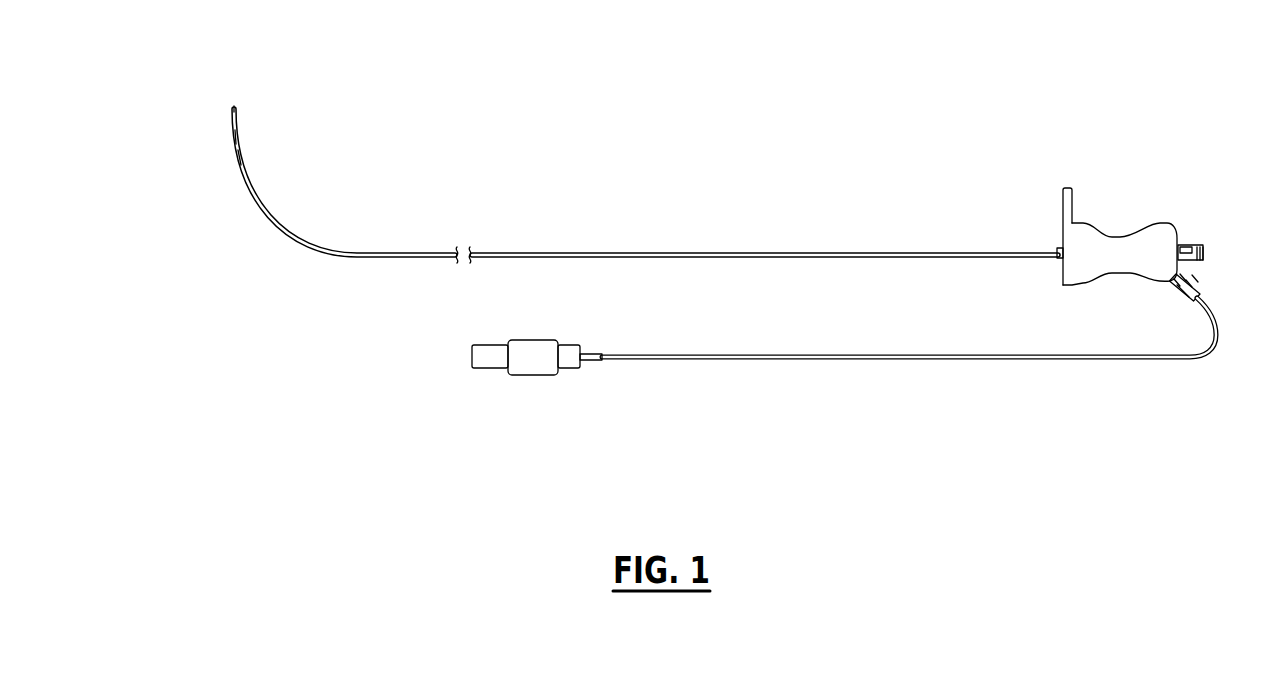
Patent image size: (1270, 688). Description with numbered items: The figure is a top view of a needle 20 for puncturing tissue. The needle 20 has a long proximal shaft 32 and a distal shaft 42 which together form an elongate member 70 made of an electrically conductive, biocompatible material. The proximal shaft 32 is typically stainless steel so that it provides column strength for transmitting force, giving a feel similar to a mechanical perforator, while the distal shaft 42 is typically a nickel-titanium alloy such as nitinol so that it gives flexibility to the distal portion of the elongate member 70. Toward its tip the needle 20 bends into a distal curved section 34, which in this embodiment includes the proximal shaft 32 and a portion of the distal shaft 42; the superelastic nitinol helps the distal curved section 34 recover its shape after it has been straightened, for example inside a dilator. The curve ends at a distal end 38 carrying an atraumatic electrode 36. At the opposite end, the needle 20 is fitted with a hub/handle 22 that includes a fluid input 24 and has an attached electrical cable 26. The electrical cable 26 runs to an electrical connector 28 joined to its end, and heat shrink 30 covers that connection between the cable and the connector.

The needle 20 is at (670, 264).
The hub/handle 22 is at (1072, 288).
The fluid input 24 is at (1187, 245).
The electrical cable 26 is at (1157, 362).
The electrical connector 28 is at (532, 365).
The heat shrink 30 is at (593, 350).
The proximal shaft 32 is at (390, 252).
The distal curved section 34 is at (238, 155).
The atraumatic electrode 36 is at (233, 110).
The distal end 38 is at (256, 106).
The distal shaft 42 is at (213, 137).
The elongate member 70 is at (391, 111).